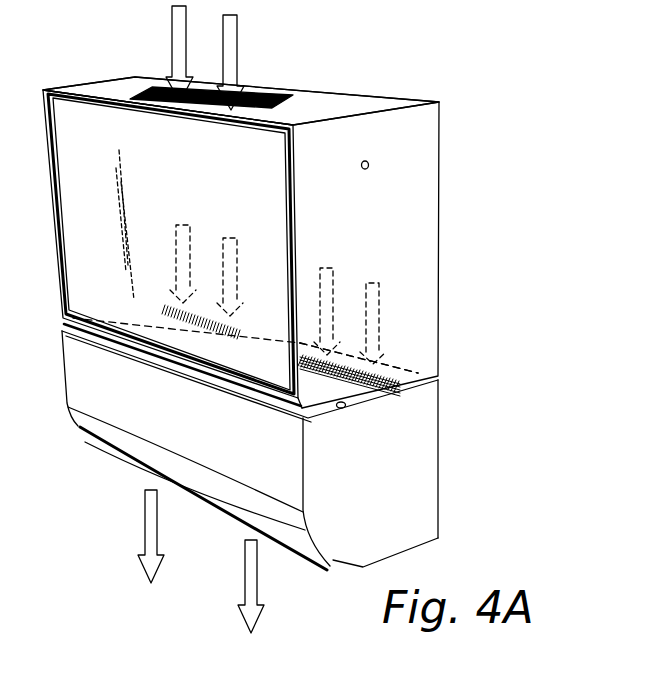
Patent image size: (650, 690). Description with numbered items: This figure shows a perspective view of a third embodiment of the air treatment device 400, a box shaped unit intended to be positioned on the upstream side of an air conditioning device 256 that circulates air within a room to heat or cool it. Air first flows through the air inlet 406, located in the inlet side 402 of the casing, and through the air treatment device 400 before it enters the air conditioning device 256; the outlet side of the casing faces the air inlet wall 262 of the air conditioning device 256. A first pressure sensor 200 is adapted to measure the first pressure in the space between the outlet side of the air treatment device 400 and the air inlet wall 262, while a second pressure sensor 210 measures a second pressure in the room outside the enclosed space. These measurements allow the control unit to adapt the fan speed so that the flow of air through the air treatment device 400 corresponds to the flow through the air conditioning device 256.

The air treatment device 400 is at (418, 248).
The inlet side 402 is at (358, 102).
The air inlet 406 is at (263, 80).
The second pressure sensor 210 is at (369, 164).
The air inlet wall 262 is at (422, 375).
The air conditioning device 256 is at (420, 506).
The first pressure sensor 200 is at (345, 404).